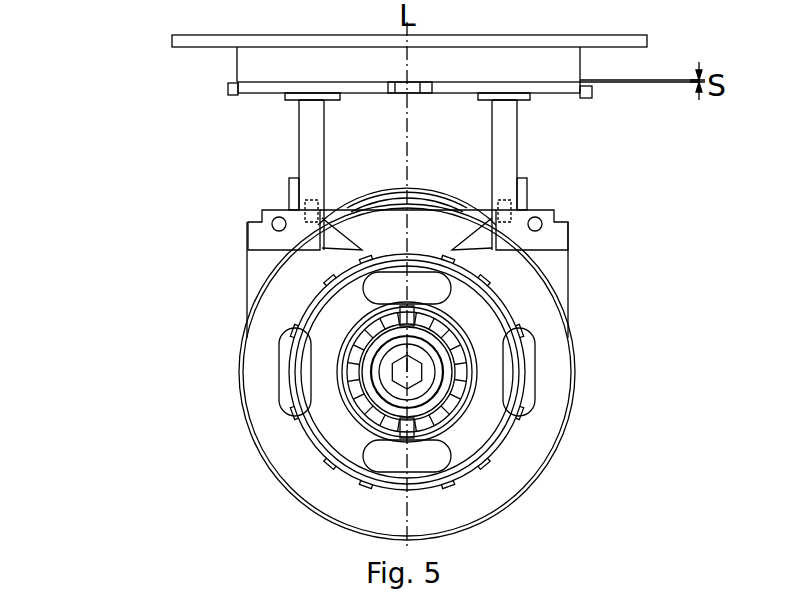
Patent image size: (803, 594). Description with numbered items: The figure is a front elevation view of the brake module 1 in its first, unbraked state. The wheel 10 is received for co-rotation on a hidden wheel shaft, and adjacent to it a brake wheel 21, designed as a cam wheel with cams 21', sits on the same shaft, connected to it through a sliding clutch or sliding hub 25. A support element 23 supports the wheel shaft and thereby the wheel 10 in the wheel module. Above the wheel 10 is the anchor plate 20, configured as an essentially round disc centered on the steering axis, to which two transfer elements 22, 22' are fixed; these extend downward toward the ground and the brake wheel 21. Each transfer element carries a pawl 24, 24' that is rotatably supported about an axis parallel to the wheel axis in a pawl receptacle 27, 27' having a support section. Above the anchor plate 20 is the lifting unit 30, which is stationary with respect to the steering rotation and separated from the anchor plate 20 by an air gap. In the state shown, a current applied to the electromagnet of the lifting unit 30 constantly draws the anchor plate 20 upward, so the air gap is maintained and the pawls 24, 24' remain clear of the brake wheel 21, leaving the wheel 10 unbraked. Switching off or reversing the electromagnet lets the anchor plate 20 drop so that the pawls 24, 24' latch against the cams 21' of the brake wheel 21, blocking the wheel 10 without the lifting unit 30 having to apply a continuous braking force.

The brake module 1 is at (86, 528).
The wheel 10 is at (566, 382).
The anchor plate 20 is at (230, 92).
The brake wheel 21 is at (482, 379).
The cams 21' is at (485, 416).
The transfer element 22 is at (275, 175).
The transfer element 22' is at (467, 175).
The support element 23 is at (560, 266).
The pawl 24 is at (272, 196).
The pawl 24' is at (545, 196).
The sliding hub 25 is at (456, 424).
The pawl receptacle 27 is at (254, 230).
The pawl receptacle 27' is at (563, 223).
The lifting unit 30 is at (186, 47).